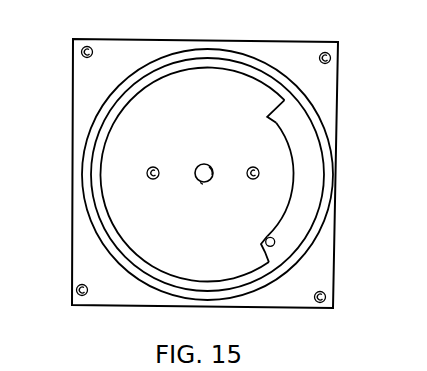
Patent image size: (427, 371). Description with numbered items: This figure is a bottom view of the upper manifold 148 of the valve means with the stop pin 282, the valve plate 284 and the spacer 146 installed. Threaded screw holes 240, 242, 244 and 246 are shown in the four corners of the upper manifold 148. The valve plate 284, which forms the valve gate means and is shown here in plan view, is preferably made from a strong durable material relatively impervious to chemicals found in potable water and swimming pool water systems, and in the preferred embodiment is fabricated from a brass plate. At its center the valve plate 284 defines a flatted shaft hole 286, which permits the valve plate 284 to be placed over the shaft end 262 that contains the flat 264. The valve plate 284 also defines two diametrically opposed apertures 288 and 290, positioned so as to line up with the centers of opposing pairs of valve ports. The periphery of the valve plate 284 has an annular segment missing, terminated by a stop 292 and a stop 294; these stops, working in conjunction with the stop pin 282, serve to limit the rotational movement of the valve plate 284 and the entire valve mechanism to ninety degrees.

The upper manifold 148 is at (80, 90).
The spacer 146 is at (308, 113).
The valve plate 284 is at (158, 243).
The stop 292 is at (266, 108).
The stop pin 282 is at (276, 242).
The stop 294 is at (262, 250).
The threaded screw hole 240 is at (88, 46).
The threaded screw hole 242 is at (331, 57).
The threaded screw hole 244 is at (77, 290).
The threaded screw hole 246 is at (326, 297).
The shaft end 262 is at (204, 164).
The flatted shaft hole 286 is at (207, 182).
The flat 264 is at (214, 176).
The aperture 288 is at (158, 180).
The aperture 290 is at (256, 180).